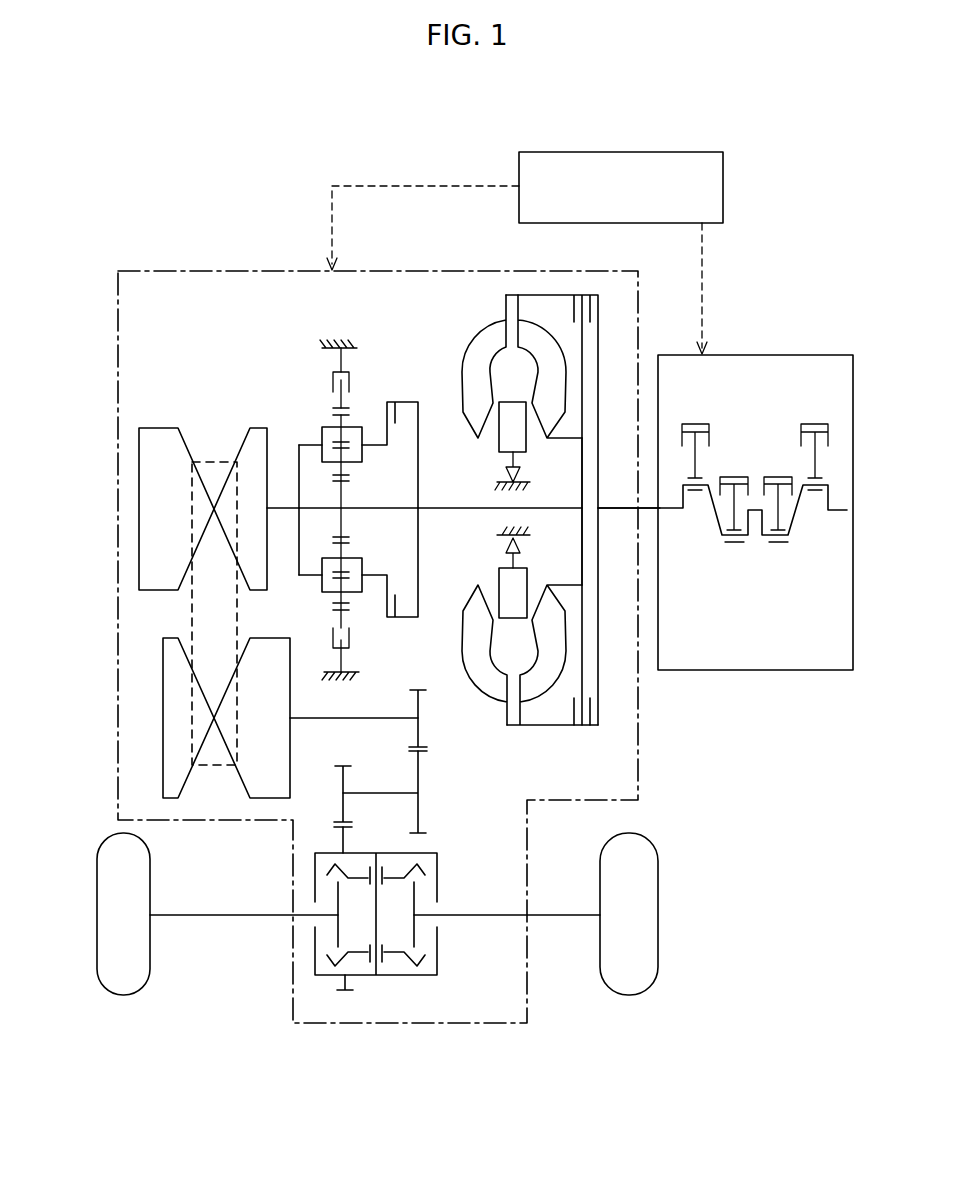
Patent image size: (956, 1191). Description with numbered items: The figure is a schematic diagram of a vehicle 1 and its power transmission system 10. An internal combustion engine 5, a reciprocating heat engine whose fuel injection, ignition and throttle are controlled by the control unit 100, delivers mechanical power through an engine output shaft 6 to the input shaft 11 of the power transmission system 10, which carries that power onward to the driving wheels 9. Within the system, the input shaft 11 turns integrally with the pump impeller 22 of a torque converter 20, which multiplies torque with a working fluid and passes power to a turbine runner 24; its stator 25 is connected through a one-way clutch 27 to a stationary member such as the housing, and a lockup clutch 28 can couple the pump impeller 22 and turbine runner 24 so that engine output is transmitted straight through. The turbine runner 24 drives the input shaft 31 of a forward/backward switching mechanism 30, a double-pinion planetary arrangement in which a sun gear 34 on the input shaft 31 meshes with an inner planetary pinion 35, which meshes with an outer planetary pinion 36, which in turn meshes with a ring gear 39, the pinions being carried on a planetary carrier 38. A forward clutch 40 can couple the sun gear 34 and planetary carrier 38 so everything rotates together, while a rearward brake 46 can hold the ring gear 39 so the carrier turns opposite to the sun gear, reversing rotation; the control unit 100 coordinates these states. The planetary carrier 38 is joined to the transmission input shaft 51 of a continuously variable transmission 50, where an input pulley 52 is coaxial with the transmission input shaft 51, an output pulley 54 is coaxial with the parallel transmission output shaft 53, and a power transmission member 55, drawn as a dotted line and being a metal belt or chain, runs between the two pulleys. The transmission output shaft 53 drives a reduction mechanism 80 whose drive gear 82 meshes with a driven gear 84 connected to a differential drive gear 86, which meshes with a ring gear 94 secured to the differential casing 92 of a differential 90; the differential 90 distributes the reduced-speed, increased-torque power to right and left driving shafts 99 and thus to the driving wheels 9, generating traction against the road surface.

The vehicle 1 is at (238, 128).
The internal combustion engine 5 is at (825, 350).
The engine output shaft 6 is at (683, 520).
The driving wheel 9 is at (150, 868).
The power transmission system 10 is at (144, 270).
The input shaft 11 is at (616, 506).
The torque converter 20 is at (457, 346).
The pump impeller 22 is at (464, 398).
The turbine runner 24 is at (530, 440).
The stator 25 is at (499, 575).
The one-way clutch 27 is at (525, 541).
The lockup clutch 28 is at (583, 738).
The forward/backward switching mechanism 30 is at (368, 340).
The input shaft 31 is at (432, 506).
The sun gear 34 is at (346, 516).
The inner planetary pinion 35 is at (350, 478).
The outer planetary pinion 36 is at (333, 412).
The planetary carrier 38 is at (320, 574).
The ring gear 39 is at (333, 628).
The forward clutch 40 is at (393, 396).
The rearward brake 46 is at (374, 642).
The transmission 50 is at (212, 424).
The transmission input shaft 51 is at (283, 506).
The input pulley 52 is at (128, 505).
The transmission output shaft 53 is at (303, 716).
The output pulley 54 is at (140, 722).
The power transmission member 55 is at (192, 606).
The reduction mechanism 80 is at (458, 762).
The drive gear 82 is at (421, 701).
The driven gear 84 is at (421, 811).
The differential drive gear 86 is at (340, 783).
The differential 90 is at (461, 972).
The differential casing 92 is at (438, 869).
The ring gear 94 is at (346, 838).
The driving shaft 99 is at (227, 920).
The control unit 100 is at (680, 152).